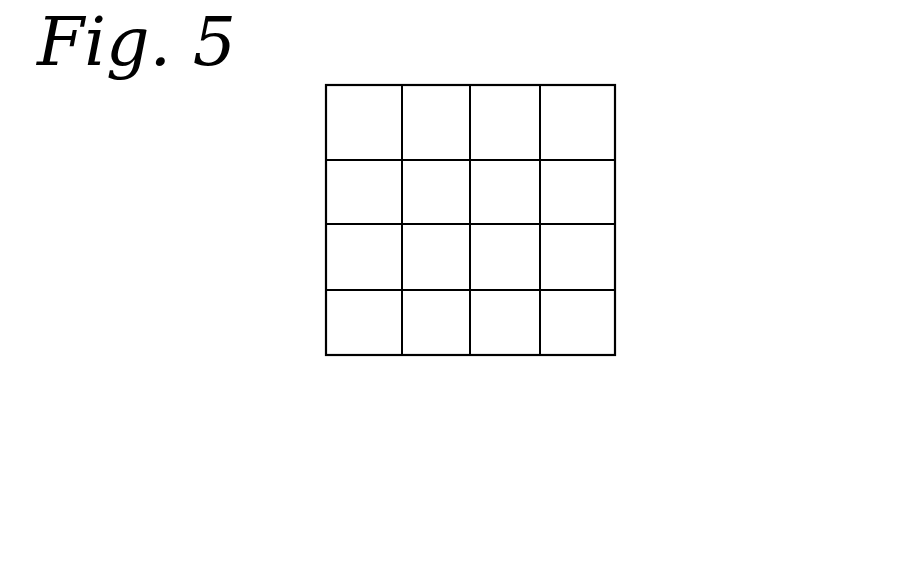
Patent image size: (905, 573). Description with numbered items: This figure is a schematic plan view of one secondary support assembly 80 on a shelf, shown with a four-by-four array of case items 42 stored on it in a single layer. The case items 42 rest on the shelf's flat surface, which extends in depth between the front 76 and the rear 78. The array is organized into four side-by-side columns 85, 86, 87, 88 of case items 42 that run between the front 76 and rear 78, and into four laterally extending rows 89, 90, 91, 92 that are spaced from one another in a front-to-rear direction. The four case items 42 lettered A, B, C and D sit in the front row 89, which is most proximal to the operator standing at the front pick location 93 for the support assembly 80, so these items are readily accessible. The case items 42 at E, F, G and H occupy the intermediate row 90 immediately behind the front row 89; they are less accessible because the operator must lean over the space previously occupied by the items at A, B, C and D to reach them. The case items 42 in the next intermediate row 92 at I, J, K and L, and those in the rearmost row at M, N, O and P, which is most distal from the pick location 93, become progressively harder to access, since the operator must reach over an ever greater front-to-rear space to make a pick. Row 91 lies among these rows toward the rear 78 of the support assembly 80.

The support assembly 80 is at (658, 88).
The case items 42 is at (368, 97).
The rear 78 is at (502, 80).
The front 76 is at (567, 360).
The intermediate row 92 is at (326, 133).
The row 91 is at (326, 183).
The intermediate row 90 is at (326, 270).
The front row 89 is at (615, 322).
The column 85 is at (352, 355).
The front pick location 93 is at (399, 355).
The column 86 is at (422, 355).
The column 87 is at (516, 355).
The column 88 is at (597, 355).